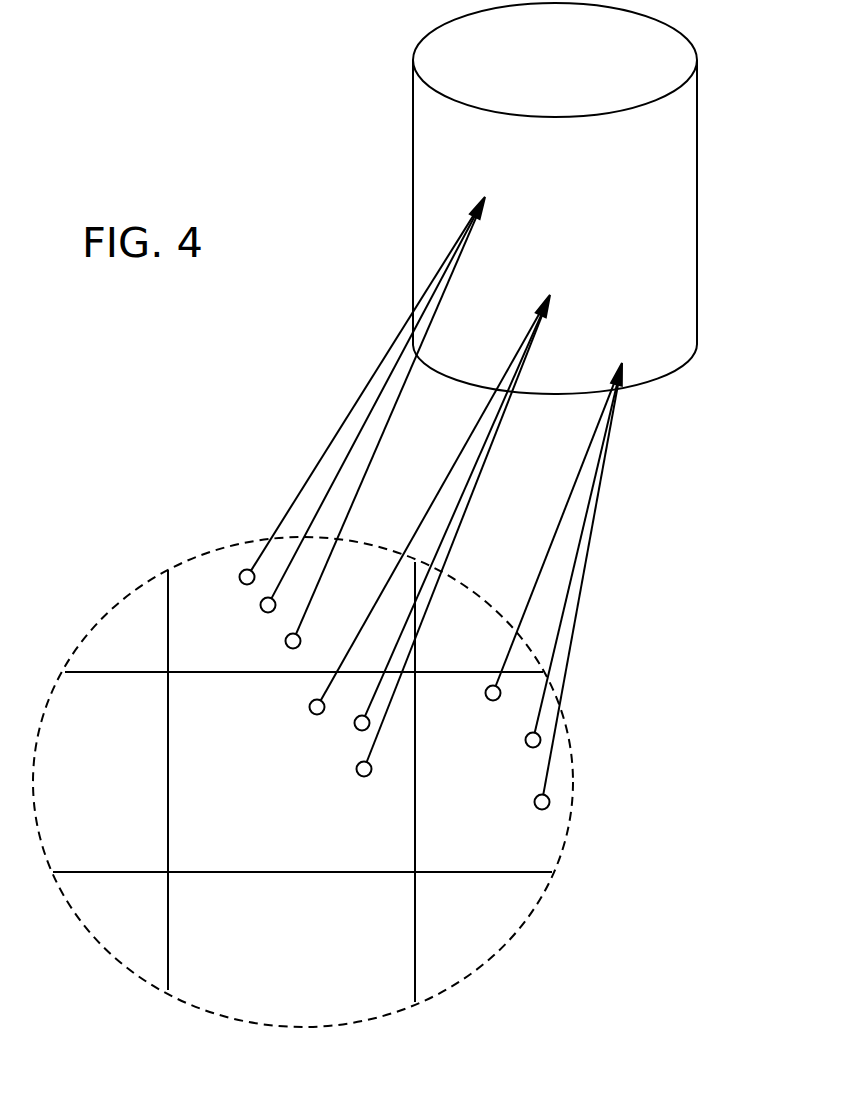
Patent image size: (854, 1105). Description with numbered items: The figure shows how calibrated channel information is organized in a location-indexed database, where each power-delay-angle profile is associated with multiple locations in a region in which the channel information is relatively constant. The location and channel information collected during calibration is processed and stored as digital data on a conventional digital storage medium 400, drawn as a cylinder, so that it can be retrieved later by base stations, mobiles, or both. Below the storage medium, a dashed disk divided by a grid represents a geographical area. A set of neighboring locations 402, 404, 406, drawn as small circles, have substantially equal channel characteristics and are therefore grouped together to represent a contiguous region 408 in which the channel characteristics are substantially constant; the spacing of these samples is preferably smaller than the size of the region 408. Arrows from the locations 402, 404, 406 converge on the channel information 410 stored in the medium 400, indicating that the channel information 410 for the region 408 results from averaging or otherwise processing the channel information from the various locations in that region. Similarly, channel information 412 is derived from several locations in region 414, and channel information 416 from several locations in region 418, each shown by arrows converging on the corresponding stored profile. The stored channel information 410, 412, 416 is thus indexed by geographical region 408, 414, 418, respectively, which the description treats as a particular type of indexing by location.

The digital storage medium 400 is at (580, 71).
The neighboring location 402 is at (239, 577).
The neighboring location 404 is at (260, 605).
The neighboring location 406 is at (286, 641).
The contiguous region 408 is at (372, 602).
The channel information 410 is at (437, 183).
The channel information 412 is at (613, 272).
The region 414 is at (298, 791).
The channel information 416 is at (673, 345).
The region 418 is at (495, 781).